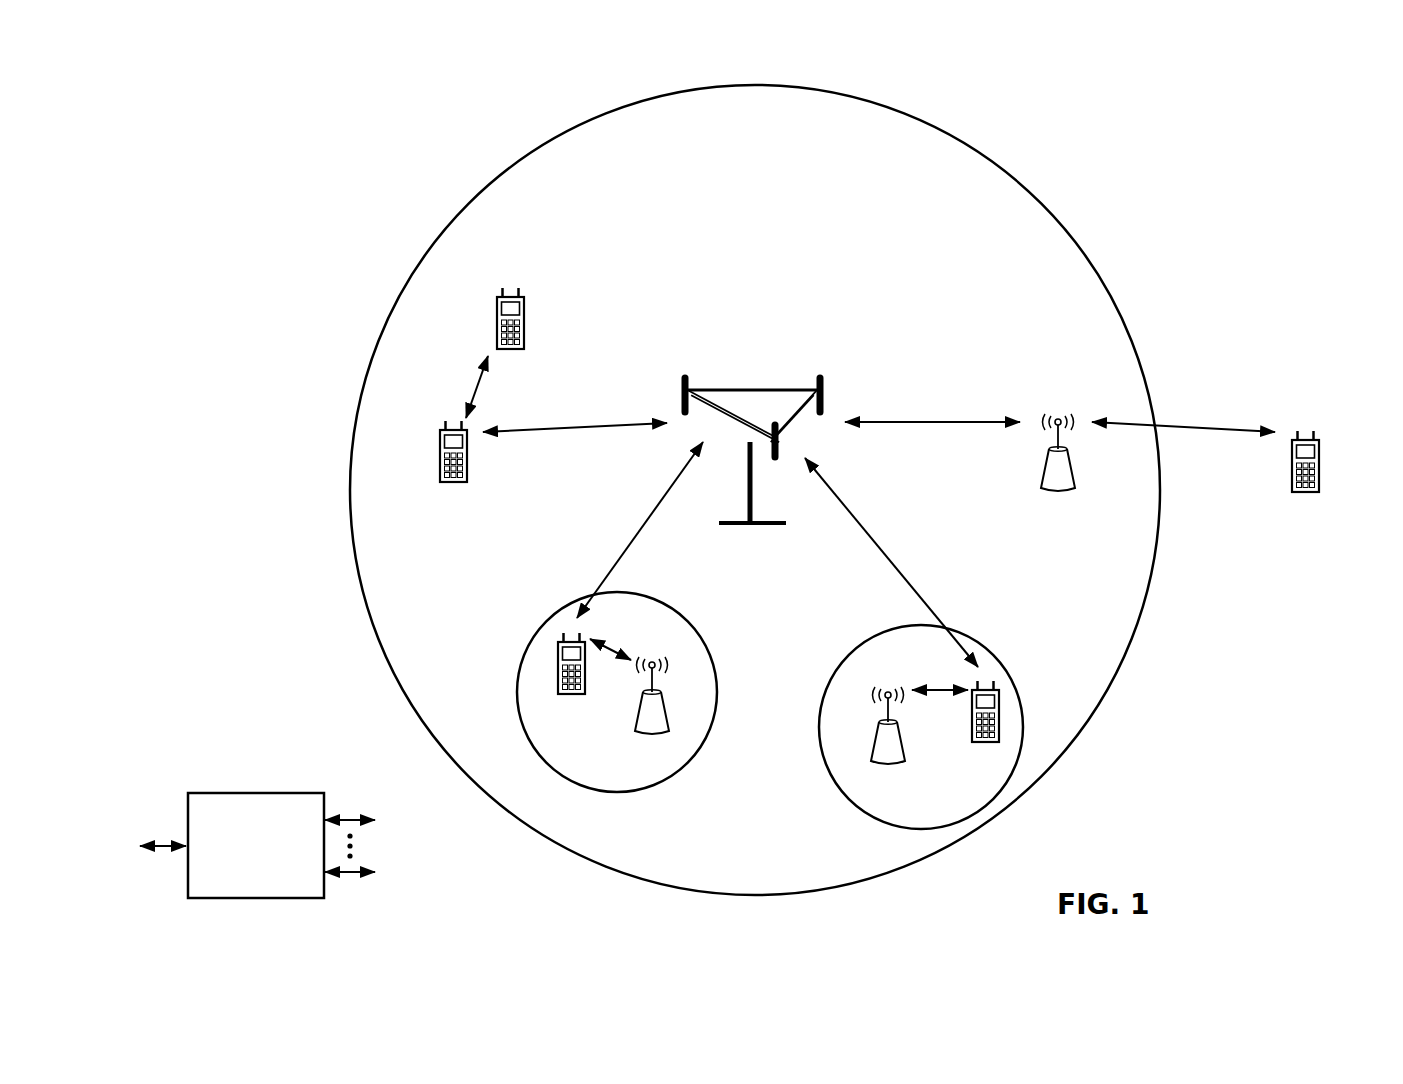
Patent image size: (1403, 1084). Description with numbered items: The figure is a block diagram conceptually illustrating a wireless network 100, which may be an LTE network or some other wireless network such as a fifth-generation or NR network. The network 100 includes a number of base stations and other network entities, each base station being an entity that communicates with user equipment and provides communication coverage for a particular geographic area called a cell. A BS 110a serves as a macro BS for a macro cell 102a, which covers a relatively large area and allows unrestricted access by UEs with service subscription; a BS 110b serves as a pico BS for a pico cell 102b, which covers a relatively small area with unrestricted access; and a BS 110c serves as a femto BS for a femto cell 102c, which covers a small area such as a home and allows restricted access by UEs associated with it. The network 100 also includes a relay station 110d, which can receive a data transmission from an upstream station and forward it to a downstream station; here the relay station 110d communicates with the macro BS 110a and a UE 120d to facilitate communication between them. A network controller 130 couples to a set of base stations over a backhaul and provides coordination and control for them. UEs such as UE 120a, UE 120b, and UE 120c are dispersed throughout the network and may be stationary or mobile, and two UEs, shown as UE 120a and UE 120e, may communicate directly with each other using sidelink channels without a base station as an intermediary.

The wireless network 100 is at (1244, 139).
The macro cell 102a is at (1037, 170).
The pico cell 102b is at (704, 611).
The femto cell 102c is at (845, 657).
The macro BS 110a is at (763, 389).
The pico BS 110b is at (679, 711).
The femto BS 110c is at (872, 744).
The relay station 110d is at (1059, 417).
The UE 120a is at (440, 436).
The UE 120b is at (558, 690).
The UE 120c is at (972, 738).
The UE 120d is at (1320, 448).
The UE 120e is at (500, 301).
The network controller 130 is at (262, 781).